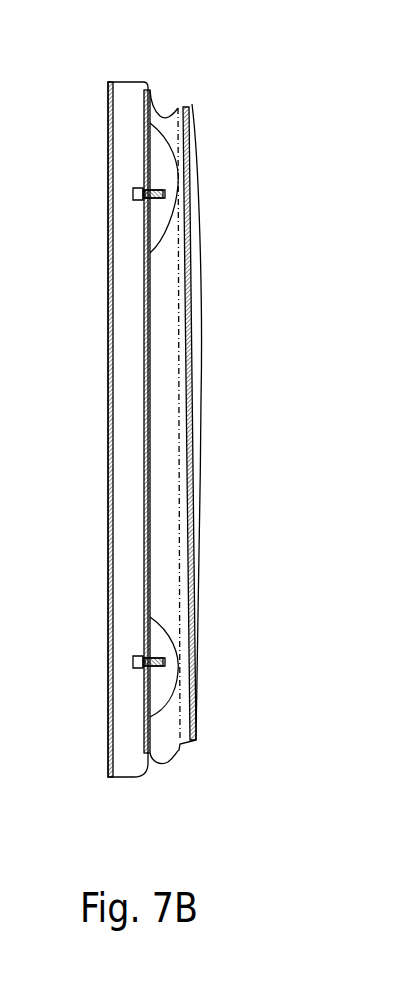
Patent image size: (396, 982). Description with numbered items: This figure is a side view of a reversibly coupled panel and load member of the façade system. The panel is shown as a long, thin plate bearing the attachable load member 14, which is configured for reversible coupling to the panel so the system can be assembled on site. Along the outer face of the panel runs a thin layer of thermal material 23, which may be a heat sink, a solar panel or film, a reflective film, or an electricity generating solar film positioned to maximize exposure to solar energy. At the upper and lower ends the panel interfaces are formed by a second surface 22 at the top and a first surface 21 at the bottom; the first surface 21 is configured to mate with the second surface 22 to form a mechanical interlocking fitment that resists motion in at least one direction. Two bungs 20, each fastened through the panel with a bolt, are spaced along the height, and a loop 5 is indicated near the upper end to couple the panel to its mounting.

The attachable load member 14 is at (118, 778).
The bung 20 is at (160, 150).
The first surface 21 is at (179, 763).
The second surface 22 is at (177, 102).
The thermal material 23 is at (191, 409).
The loop 5 is at (152, 163).